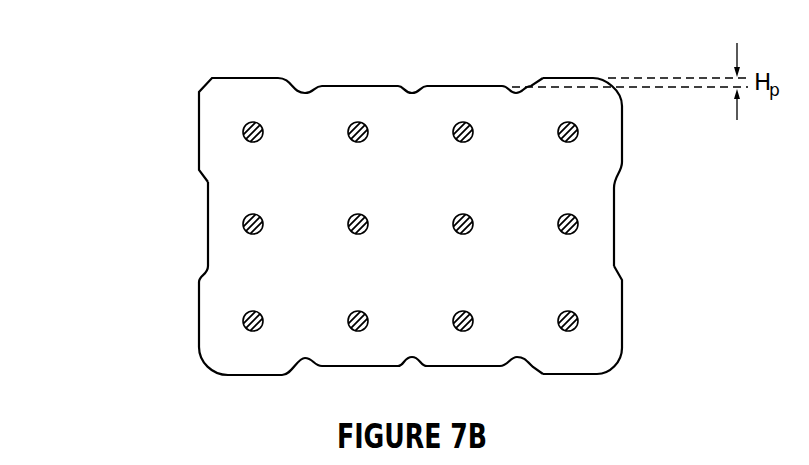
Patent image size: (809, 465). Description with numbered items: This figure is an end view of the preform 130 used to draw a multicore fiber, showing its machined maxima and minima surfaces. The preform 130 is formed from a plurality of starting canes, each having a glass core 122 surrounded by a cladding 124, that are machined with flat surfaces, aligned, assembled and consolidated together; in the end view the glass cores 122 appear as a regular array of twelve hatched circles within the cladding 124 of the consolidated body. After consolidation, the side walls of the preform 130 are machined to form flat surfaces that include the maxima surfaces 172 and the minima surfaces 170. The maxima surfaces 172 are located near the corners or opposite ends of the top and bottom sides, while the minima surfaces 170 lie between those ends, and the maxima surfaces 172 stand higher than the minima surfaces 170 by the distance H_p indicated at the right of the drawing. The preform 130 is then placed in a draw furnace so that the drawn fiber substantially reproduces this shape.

The preform 130 is at (138, 30).
The glass core 122 is at (355, 123).
The cladding 124 is at (232, 175).
The minima surfaces 170 is at (353, 86).
The maxima surfaces 172 is at (245, 78).